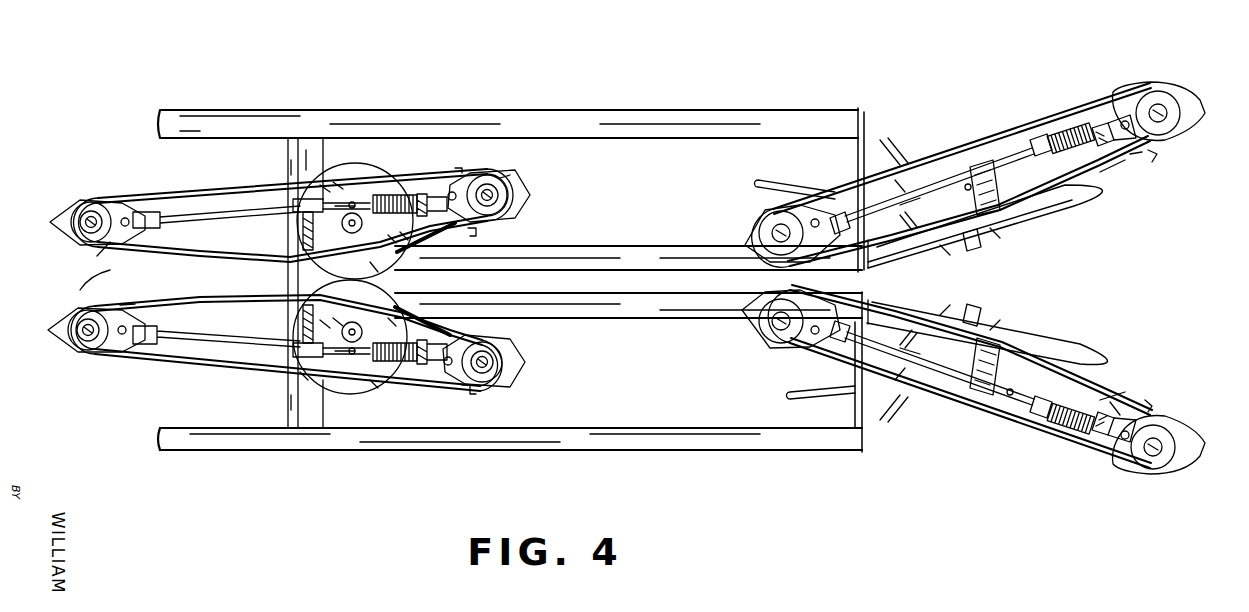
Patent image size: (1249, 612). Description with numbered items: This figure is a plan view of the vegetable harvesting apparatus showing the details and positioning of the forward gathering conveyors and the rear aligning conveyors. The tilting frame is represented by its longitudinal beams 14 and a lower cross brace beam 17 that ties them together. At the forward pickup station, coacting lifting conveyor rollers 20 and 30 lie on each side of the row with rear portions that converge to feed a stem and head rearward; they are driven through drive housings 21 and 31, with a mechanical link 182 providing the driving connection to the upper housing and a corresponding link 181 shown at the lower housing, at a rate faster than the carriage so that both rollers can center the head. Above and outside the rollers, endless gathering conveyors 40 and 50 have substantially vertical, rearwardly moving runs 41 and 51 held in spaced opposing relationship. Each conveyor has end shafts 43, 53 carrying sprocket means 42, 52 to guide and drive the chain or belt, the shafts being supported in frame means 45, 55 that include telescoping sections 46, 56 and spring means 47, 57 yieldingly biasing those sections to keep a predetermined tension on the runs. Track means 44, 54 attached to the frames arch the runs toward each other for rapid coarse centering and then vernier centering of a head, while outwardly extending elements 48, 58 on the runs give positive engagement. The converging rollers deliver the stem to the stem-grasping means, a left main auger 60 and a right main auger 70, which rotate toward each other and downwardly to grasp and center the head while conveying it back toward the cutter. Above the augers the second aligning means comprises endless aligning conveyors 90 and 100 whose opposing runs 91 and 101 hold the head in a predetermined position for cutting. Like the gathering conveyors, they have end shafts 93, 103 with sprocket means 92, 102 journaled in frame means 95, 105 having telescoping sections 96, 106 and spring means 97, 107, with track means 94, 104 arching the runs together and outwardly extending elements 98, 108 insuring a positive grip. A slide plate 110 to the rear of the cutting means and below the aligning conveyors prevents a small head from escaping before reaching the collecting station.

The longitudinal beams 14 is at (680, 127).
The lower cross brace beams 17 is at (313, 140).
The lifting conveyor roller 20 is at (1055, 345).
The drive housing 21 is at (912, 430).
The lifting conveyor roller 30 is at (1075, 204).
The drive housing 31 is at (886, 125).
The gathering conveyor 40 is at (1095, 466).
The run 41 is at (1115, 405).
The sprocket means 42 is at (785, 336).
The end shaft 43 is at (775, 324).
The track means 44 is at (1120, 410).
The frame means 45 is at (995, 402).
The telescoping section 46 is at (1063, 432).
The spring means 47 is at (1070, 442).
The outwardly extending elements 48 is at (1150, 405).
The gathering conveyor 50 is at (1120, 62).
The run 51 is at (1138, 158).
The sprocket means 52 is at (1158, 105).
The end shaft 53 is at (1162, 112).
The track means 54 is at (1118, 162).
The frame means 55 is at (978, 163).
The telescoping section 56 is at (1062, 128).
The spring means 57 is at (1042, 136).
The outwardly extending elements 58 is at (1158, 155).
The left main auger 60 is at (626, 310).
The right main auger 70 is at (660, 262).
The aligning conveyor 90 is at (155, 382).
The run 91 is at (125, 302).
The sprocket means 92 is at (92, 348).
The end shaft 93 is at (88, 332).
The track means 94 is at (450, 336).
The frame means 95 is at (330, 358).
The telescoping section 96 is at (378, 360).
The spring means 97 is at (410, 362).
The outwardly extending elements 98 is at (470, 392).
The aligning conveyor 100 is at (152, 152).
The run 101 is at (97, 256).
The sprocket means 102 is at (80, 220).
The end shaft 103 is at (91, 218).
The track means 104 is at (478, 233).
The frame means 105 is at (305, 200).
The telescoping section 106 is at (410, 188).
The spring means 107 is at (390, 203).
The outwardly extending elements 108 is at (458, 165).
The slide plate 110 is at (80, 290).
The lower pin 181 is at (812, 398).
The mechanical link 182 is at (806, 180).